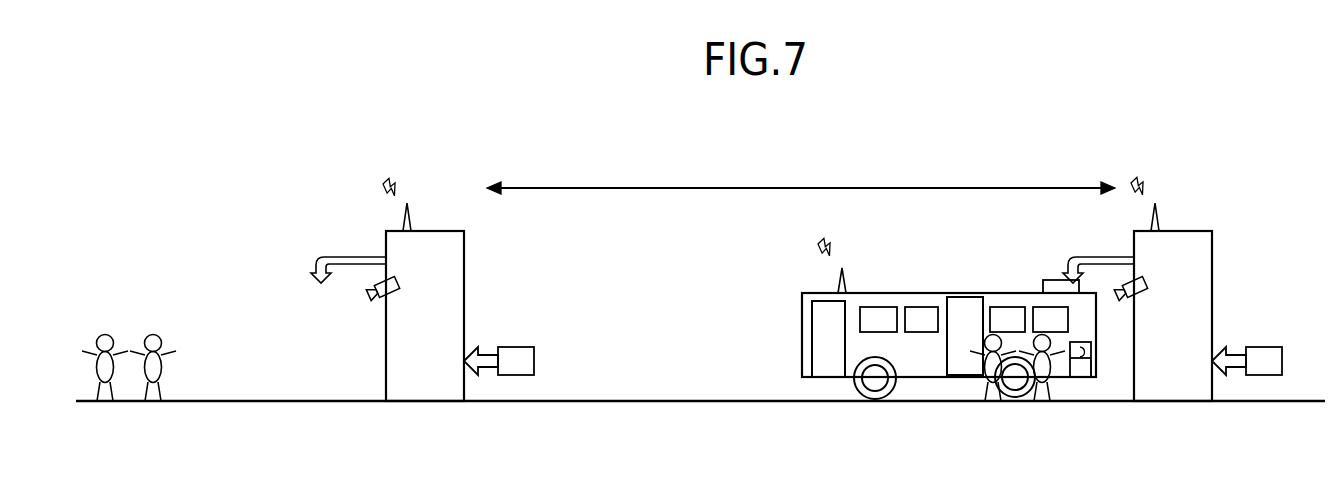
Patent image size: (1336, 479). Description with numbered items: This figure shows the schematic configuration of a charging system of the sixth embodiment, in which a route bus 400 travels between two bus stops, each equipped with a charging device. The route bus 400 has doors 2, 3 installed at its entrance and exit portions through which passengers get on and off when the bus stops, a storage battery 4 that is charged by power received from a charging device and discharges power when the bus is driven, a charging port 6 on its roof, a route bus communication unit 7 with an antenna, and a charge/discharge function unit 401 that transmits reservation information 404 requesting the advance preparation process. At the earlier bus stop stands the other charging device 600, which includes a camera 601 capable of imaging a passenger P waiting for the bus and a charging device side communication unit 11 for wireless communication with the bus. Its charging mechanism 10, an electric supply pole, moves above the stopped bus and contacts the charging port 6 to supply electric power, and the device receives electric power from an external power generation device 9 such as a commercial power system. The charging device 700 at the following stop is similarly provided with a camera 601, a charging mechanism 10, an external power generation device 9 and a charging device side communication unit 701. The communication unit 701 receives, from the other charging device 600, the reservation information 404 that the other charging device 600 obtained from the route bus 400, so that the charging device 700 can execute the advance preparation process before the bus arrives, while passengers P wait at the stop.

The door 2 is at (826, 372).
The door 3 is at (965, 368).
The storage battery 4 is at (1080, 368).
The charging port 6 is at (1050, 280).
The route bus communication unit 7 is at (848, 284).
The external power generation device 9 is at (534, 358).
The charging mechanism 10 is at (350, 257).
The charging device side communication unit 11 is at (1162, 224).
The route bus 400 is at (940, 292).
The charge/discharge function unit 401 is at (1088, 368).
The reservation information 404 is at (796, 186).
The charging device 600 is at (1213, 236).
The camera 601 is at (400, 280).
The charging device 700 is at (465, 236).
The charging device side communication unit 701 is at (414, 224).
The passenger P is at (103, 334).